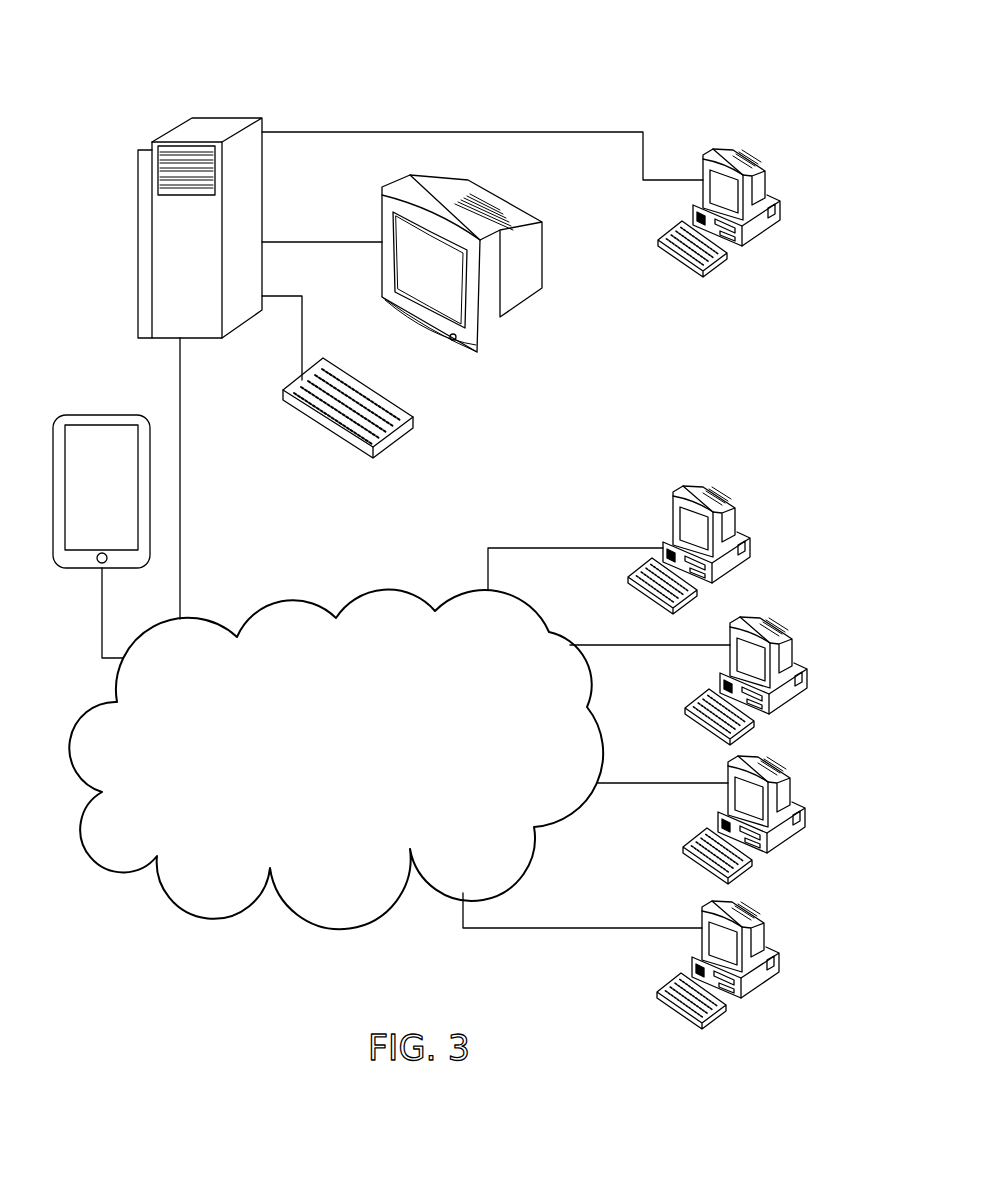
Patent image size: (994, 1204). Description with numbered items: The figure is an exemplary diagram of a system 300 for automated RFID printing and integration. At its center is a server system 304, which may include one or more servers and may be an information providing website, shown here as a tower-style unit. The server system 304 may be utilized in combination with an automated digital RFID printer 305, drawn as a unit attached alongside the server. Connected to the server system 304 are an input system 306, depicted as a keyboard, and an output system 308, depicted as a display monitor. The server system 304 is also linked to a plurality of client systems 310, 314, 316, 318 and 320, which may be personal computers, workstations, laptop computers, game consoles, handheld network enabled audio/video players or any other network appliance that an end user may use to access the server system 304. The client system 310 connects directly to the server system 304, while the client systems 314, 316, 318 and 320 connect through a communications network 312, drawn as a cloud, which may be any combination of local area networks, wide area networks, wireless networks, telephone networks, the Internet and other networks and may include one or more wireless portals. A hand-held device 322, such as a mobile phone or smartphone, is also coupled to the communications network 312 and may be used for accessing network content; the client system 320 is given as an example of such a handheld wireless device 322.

The system 300 is at (620, 92).
The server system 304 is at (220, 118).
The automated digital RFID printer 305 is at (138, 258).
The input system 306 is at (414, 421).
The output system 308 is at (542, 268).
The client system 310 is at (755, 160).
The communications network 312 is at (353, 808).
The client system 314 is at (750, 548).
The client system 316 is at (807, 679).
The client system 318 is at (805, 818).
The client system 320 is at (779, 963).
The hand-held device 322 is at (80, 414).